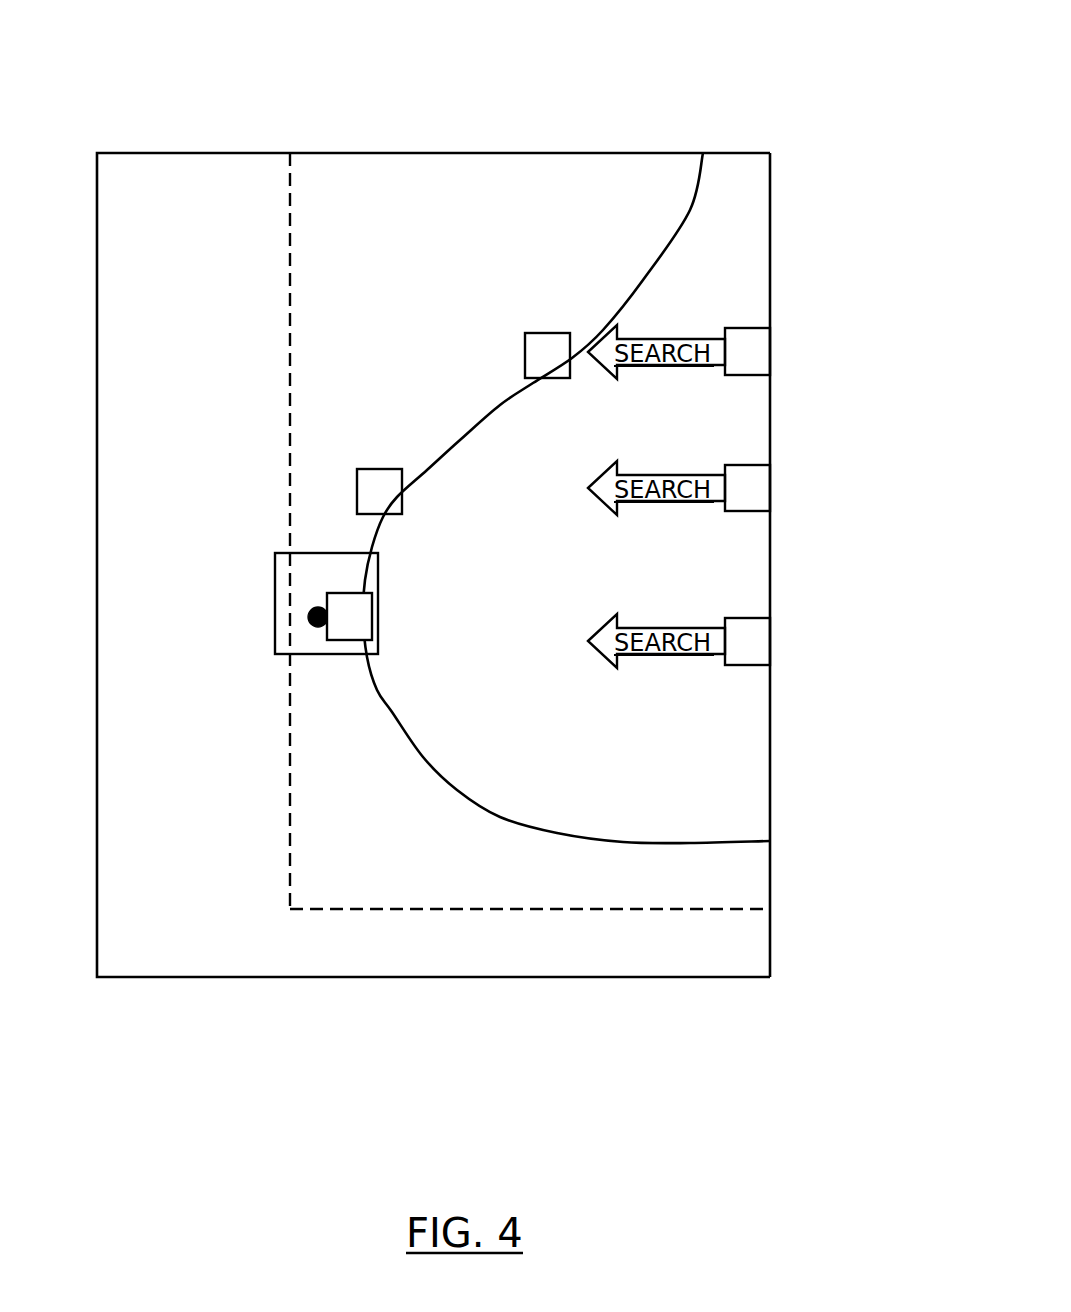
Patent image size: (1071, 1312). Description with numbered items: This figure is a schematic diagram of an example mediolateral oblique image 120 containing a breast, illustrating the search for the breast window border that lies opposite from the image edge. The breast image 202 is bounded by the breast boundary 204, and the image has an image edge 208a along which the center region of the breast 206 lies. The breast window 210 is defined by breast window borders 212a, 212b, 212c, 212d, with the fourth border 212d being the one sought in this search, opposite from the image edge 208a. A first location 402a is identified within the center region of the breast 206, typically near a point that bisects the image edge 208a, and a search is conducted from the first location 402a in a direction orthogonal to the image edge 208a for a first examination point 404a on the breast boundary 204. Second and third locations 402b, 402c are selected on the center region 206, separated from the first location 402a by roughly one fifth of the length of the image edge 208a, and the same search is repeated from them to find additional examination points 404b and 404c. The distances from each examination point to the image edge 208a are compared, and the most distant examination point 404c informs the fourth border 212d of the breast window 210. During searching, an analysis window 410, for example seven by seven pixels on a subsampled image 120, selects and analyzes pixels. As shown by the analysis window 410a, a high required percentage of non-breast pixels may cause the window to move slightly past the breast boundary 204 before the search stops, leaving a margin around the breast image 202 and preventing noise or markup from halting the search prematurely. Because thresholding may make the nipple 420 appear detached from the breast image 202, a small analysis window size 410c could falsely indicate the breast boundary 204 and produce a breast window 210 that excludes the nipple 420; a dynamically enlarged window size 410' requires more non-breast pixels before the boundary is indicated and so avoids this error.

The image 120 is at (645, 65).
The breast image 202 is at (738, 282).
The breast boundary 204 is at (710, 845).
The center region of the breast 206 is at (718, 580).
The image edge 208a is at (770, 736).
The breast window 210 is at (282, 276).
The breast window border 212a is at (770, 165).
The breast window border 212b is at (440, 153).
The breast window border 212c is at (452, 910).
The fourth breast window border 212d is at (290, 440).
The first location 402a is at (775, 482).
The second location 402b is at (777, 360).
The third location 402c is at (775, 650).
The first examination point 404a is at (397, 498).
The examination point 404b is at (570, 358).
The examination point 404c is at (358, 612).
The analysis window 410 is at (816, 320).
The analysis window 410a is at (525, 340).
The small analysis window size 410c is at (350, 642).
The larger window size 410' is at (250, 552).
The nipple 420 is at (312, 617).